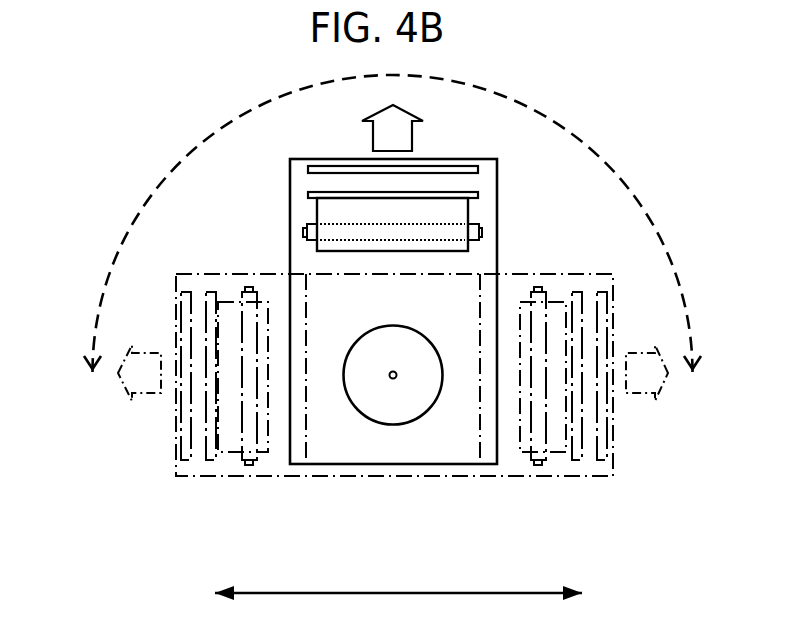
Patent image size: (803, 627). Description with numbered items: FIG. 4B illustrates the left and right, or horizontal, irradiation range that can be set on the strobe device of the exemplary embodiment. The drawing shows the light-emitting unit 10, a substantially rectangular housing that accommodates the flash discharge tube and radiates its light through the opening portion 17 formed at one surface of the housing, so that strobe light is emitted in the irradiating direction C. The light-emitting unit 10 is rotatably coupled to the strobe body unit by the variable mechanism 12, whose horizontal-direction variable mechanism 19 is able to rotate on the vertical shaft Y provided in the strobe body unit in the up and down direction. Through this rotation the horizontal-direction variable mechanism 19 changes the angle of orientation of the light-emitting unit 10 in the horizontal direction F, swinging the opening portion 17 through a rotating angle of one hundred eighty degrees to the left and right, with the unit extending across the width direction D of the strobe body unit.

The light-emitting unit 10 is at (453, 464).
The variable mechanism 12 is at (358, 412).
The horizontal-direction variable mechanism 19 is at (357, 438).
The opening portion 17 is at (452, 158).
The vertical shaft Y is at (395, 380).
The irradiating direction C is at (393, 253).
The width direction D is at (398, 581).
The horizontal direction F is at (392, 223).